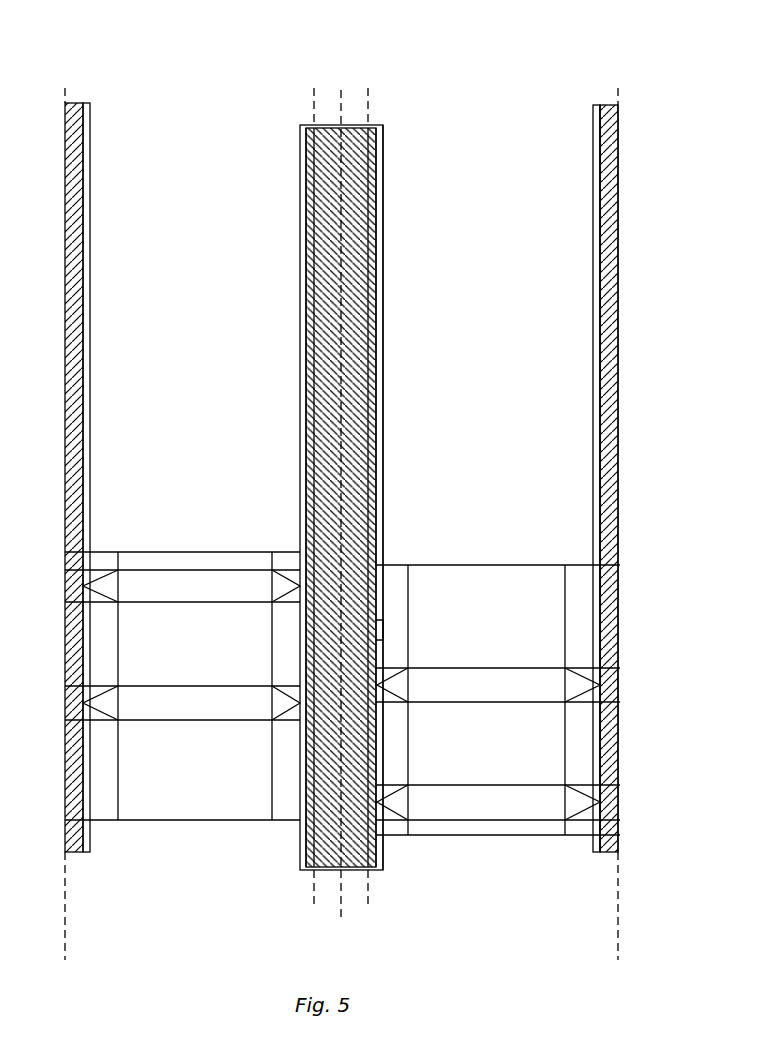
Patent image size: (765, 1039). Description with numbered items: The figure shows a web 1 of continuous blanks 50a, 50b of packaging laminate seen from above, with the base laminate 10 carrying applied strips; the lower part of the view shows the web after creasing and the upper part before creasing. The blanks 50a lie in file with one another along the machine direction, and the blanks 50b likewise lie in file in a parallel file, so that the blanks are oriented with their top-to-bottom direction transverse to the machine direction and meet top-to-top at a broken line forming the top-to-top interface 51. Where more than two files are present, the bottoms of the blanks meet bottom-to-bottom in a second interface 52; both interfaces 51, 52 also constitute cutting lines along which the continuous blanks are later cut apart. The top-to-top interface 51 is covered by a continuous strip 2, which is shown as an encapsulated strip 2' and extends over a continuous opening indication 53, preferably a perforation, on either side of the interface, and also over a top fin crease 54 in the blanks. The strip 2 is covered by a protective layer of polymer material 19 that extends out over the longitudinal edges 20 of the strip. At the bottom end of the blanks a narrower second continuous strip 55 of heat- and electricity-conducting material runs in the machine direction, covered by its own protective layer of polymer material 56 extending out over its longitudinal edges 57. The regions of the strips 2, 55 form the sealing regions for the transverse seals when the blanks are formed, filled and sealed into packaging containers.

The web 1 is at (627, 156).
The strip 2 is at (372, 497).
The encapsulated strip 2' is at (388, 493).
The base laminate 10 is at (183, 328).
The protective layer of polymer material 19 is at (378, 357).
The longitudinal edges 20 is at (306, 217).
The top-to-top interface 51 is at (348, 896).
The second interface 52 is at (72, 925).
The opening indication 53 is at (366, 84).
The top fin crease 54 is at (376, 630).
The second continuous strip 55 is at (607, 393).
The protective layer of polymer material 56 is at (600, 270).
The longitudinal edges 57 is at (601, 334).
The blanks 50a is at (157, 704).
The blanks 50b is at (521, 680).